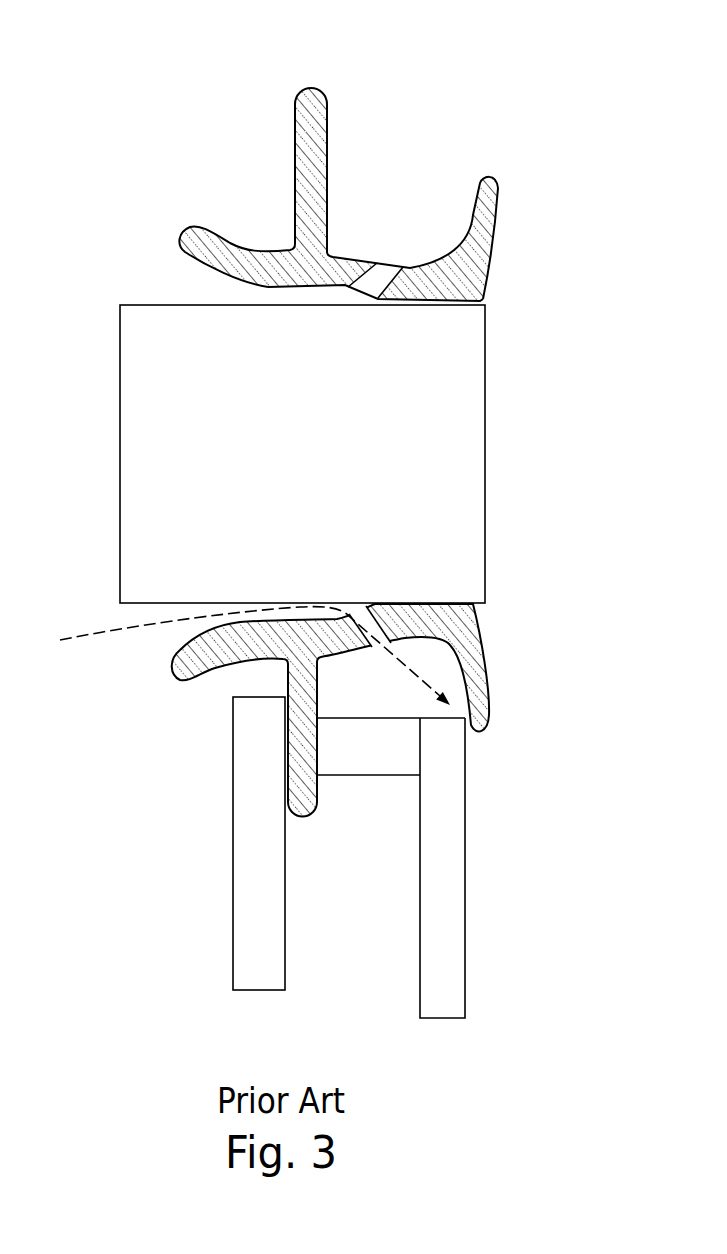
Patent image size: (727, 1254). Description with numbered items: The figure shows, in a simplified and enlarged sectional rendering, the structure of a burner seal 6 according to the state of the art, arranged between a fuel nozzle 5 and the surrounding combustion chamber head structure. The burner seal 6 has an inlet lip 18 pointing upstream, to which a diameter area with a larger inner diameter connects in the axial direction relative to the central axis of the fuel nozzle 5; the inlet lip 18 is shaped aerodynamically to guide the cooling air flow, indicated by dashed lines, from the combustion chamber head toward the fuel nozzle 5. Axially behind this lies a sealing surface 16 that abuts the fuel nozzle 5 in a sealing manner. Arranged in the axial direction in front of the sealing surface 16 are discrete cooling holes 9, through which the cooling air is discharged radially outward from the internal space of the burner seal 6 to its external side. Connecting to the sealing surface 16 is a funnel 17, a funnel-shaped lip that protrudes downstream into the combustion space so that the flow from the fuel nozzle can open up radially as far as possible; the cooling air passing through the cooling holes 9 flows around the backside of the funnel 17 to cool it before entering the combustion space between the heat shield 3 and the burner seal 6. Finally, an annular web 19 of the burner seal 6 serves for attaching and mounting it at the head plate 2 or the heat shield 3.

The head plate 2 is at (240, 942).
The heat shield 3 is at (450, 940).
The fuel nozzle 5 is at (133, 477).
The burner seal 6 is at (473, 627).
The cooling holes 9 is at (386, 266).
The sealing surface 16 is at (356, 195).
The funnel 17 is at (500, 207).
The inlet lip 18 is at (183, 238).
The annular web 19 is at (312, 97).